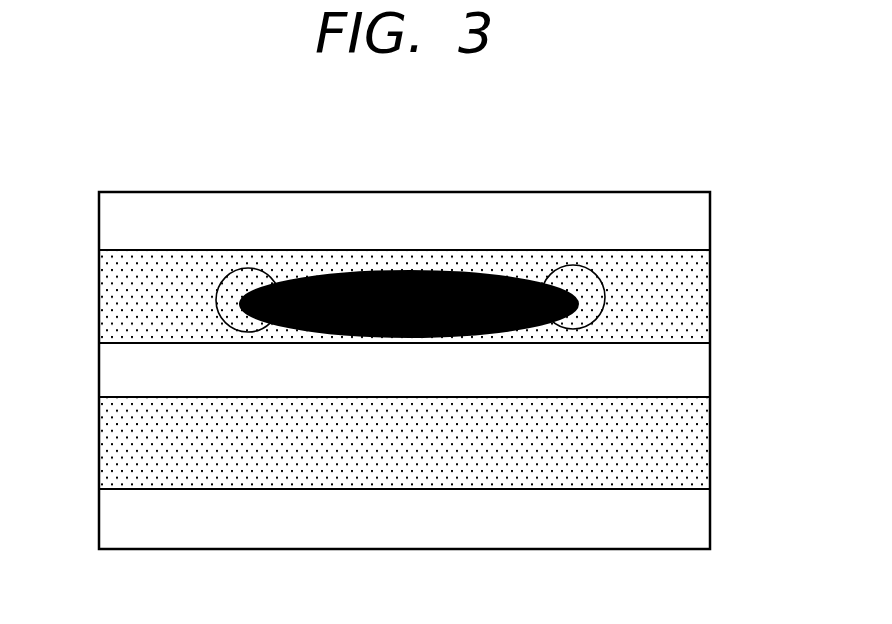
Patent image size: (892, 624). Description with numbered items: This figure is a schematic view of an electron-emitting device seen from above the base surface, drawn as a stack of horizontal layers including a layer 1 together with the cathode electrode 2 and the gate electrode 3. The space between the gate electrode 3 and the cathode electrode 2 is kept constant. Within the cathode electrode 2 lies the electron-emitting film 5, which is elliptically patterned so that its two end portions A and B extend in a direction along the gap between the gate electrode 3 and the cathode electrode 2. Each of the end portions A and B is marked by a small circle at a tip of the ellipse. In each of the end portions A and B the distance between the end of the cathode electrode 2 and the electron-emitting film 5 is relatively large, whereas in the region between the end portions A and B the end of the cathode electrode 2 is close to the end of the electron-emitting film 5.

The upper cladding / substrate layer 1 is at (700, 220).
The cathode electrode 2 is at (695, 285).
The gate electrode 3 is at (695, 443).
The electron-emitting film 5 is at (360, 271).
The end portion A is at (249, 268).
The end portion B is at (582, 265).